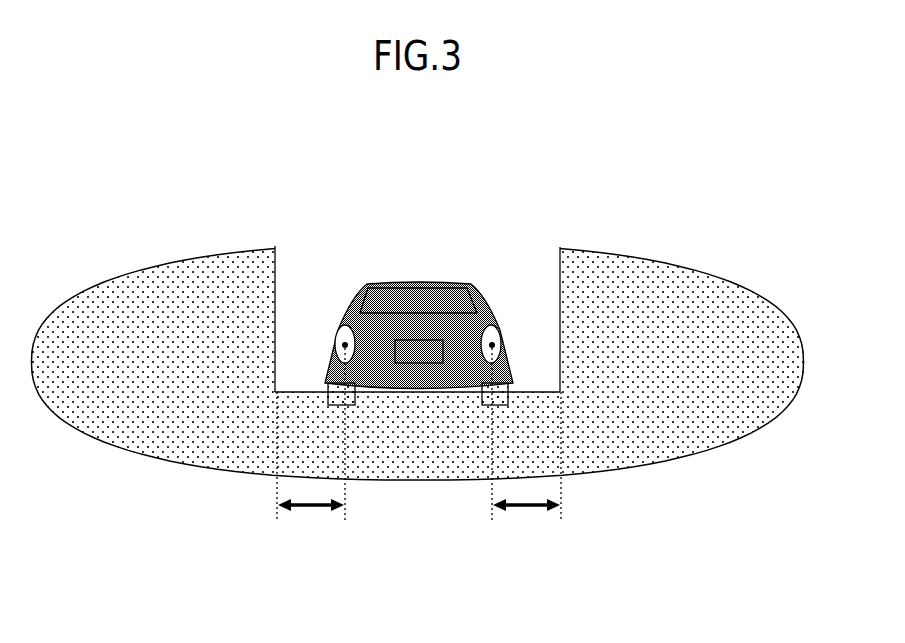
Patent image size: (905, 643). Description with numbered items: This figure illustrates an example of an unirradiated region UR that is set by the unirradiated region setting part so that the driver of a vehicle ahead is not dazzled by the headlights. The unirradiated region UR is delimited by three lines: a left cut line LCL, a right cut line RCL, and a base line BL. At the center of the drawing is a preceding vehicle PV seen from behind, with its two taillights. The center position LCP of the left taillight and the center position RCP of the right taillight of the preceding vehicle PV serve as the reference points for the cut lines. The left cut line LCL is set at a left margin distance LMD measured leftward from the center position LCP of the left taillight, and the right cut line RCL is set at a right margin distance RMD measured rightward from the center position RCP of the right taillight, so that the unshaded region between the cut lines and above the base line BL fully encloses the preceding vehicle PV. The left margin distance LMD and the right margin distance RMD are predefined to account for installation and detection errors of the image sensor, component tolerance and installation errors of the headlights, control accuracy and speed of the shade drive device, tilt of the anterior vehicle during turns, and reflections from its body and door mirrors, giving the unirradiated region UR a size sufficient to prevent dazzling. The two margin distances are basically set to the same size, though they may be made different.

The unirradiated region UR is at (460, 256).
The left cut line LCL is at (275, 288).
The right cut line RCL is at (560, 286).
The base line BL is at (417, 393).
The preceding vehicle PV is at (417, 309).
The center position of left taillight LCP is at (345, 342).
The center position of right taillight RCP is at (492, 342).
The left margin distance LMD is at (311, 441).
The right margin distance RMD is at (526, 440).